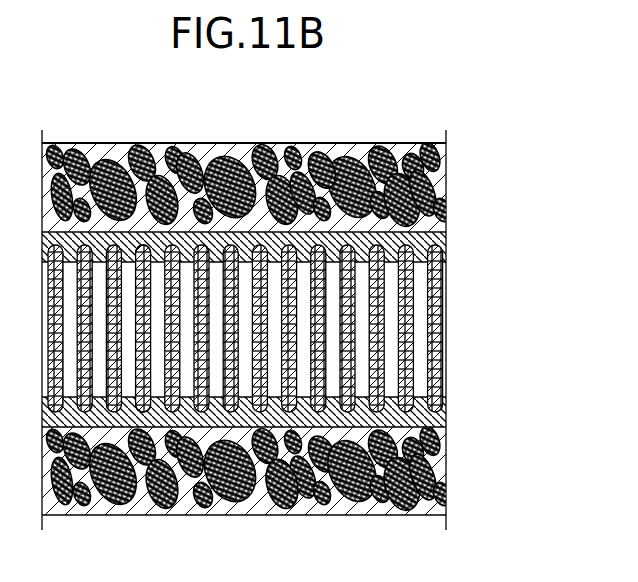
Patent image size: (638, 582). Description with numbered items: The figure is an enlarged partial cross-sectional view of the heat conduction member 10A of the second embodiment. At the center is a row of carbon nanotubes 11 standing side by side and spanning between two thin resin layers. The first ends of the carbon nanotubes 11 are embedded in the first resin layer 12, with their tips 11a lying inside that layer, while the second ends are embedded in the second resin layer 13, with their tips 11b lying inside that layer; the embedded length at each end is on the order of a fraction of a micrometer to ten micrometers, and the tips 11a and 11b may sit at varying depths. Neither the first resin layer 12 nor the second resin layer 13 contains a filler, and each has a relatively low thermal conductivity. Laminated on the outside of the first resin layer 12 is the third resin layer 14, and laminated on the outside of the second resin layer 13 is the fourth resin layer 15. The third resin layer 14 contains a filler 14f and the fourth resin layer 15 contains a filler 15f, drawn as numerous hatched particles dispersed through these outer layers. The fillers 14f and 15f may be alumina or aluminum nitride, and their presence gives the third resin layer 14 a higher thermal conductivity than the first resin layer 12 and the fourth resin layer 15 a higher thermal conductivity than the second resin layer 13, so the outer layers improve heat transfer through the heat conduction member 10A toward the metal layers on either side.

The heat conduction member 10A is at (322, 328).
The carbon nanotubes 11 is at (287, 327).
The tips of the carbon nanotubes at the first ends 11a is at (145, 412).
The tips of the carbon nanotubes at the second ends 11b is at (145, 245).
The first resin layer 12 is at (433, 413).
The second resin layer 13 is at (440, 238).
The third resin layer 14 is at (278, 496).
The filler 14f is at (283, 488).
The fourth resin layer 15 is at (279, 160).
The filler 15f is at (320, 162).